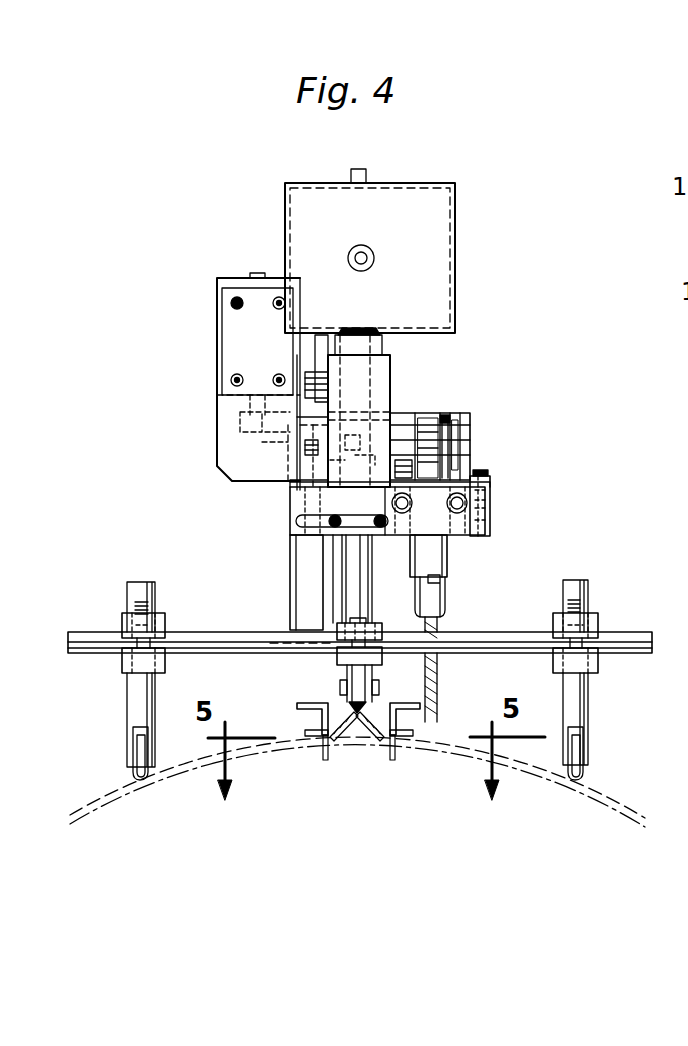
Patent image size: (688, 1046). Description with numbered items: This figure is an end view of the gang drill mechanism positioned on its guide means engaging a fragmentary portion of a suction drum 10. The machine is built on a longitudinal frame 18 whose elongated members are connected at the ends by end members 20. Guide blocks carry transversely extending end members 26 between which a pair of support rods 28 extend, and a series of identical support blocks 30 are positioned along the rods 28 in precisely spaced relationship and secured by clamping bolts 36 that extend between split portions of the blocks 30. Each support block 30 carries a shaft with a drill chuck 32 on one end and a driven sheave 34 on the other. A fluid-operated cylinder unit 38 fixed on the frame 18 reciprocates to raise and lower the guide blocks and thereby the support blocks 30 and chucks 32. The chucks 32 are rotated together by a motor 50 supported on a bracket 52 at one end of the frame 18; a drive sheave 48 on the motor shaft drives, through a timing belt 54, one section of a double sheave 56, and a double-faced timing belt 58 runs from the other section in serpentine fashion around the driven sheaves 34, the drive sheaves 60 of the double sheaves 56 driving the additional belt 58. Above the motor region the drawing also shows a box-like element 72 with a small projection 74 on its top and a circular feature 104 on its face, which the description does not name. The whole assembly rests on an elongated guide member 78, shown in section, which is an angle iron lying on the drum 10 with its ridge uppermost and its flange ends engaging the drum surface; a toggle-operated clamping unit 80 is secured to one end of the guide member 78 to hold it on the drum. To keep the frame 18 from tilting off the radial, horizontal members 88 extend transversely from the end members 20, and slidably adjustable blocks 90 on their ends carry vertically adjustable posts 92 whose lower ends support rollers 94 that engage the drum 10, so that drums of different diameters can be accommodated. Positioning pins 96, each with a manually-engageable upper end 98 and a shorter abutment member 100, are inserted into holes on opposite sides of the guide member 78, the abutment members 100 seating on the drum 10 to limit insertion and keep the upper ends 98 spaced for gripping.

The suction drum 10 is at (620, 806).
The longitudinal frame 18 is at (400, 370).
The end members 20 is at (340, 630).
The transversely extending end members 26 is at (298, 507).
The support rods 28 is at (402, 513).
The support blocks 30 is at (490, 520).
The drill chucks 32 is at (448, 582).
The driven sheaves 34 is at (445, 438).
The clamping bolts 36 is at (492, 475).
The fluid-operated cylinder unit 38 is at (290, 558).
The drive sheave 48 is at (290, 424).
The motor 50 is at (217, 310).
The bracket 52 is at (245, 325).
The timing belt 54 is at (398, 425).
The double sheave 56 is at (440, 410).
The double-faced timing belt 58 is at (460, 445).
The drive sheaves 60 is at (470, 448).
The control box 72 is at (395, 200).
The connector 74 is at (350, 175).
The guide member 78 is at (357, 720).
The toggle-operated clamping unit 80 is at (345, 685).
The horizontal members 88 is at (486, 642).
The adjustable blocks 90 is at (122, 620).
The vertical posts 92 is at (135, 697).
The rollers 94 is at (138, 772).
The positioning pins 96 is at (327, 762).
The manually-engageable upper end 98 is at (297, 706).
The abutment member 100 is at (312, 737).
The indicator 104 is at (374, 258).